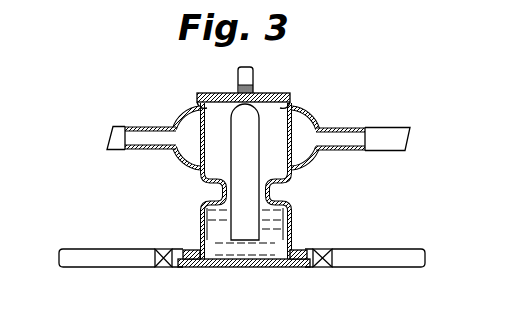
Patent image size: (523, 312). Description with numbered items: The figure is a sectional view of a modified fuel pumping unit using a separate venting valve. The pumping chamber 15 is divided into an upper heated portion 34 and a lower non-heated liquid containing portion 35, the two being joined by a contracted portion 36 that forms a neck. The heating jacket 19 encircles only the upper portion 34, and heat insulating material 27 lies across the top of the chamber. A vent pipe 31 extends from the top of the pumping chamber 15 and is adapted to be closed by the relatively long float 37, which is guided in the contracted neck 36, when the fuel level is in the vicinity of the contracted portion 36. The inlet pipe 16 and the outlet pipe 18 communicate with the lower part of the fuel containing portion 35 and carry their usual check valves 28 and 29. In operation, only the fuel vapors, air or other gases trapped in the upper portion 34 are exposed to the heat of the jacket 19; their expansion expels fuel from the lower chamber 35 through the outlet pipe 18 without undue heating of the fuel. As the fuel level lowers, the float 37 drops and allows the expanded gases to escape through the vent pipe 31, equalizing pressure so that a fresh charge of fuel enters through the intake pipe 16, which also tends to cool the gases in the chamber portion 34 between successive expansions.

The pumping chamber 15 is at (265, 121).
The inlet pipe 16 is at (125, 260).
The outlet pipe 18 is at (385, 262).
The heating jacket 19 is at (187, 159).
The heat insulating material 27 is at (215, 97).
The check valve 28 is at (162, 268).
The check valve 29 is at (322, 268).
The vent pipe 31 is at (244, 73).
The upper heated portion 34 is at (207, 108).
The lower non-heated liquid containing portion 35 is at (222, 229).
The contracted portion 36 is at (226, 192).
The float 37 is at (250, 193).